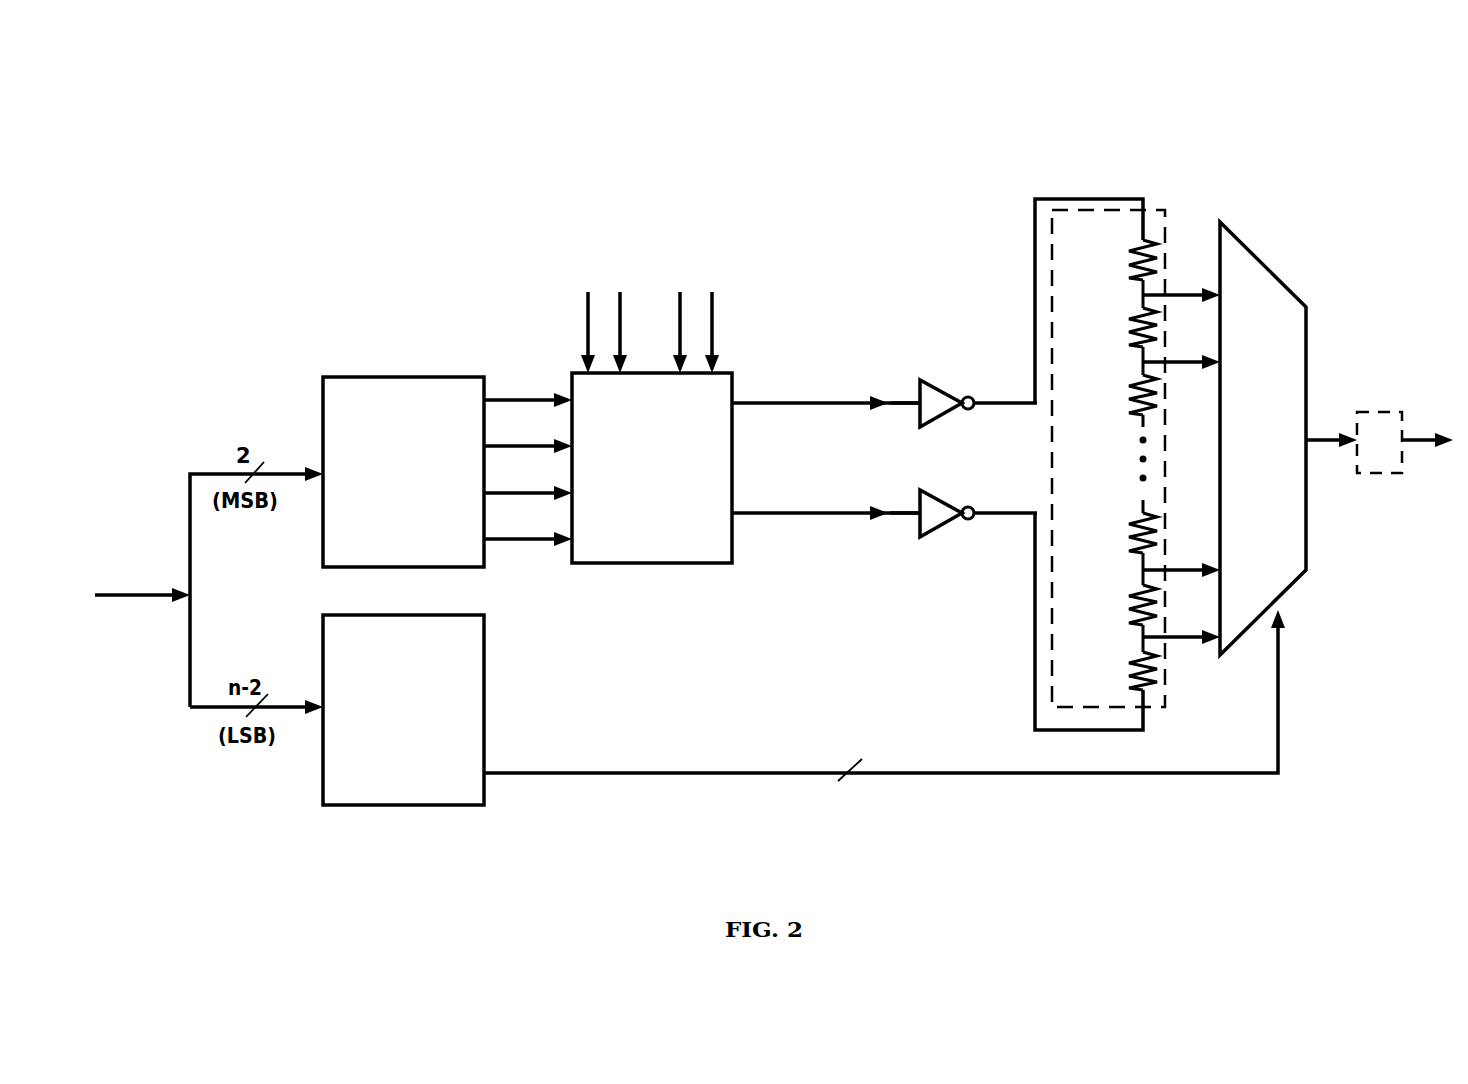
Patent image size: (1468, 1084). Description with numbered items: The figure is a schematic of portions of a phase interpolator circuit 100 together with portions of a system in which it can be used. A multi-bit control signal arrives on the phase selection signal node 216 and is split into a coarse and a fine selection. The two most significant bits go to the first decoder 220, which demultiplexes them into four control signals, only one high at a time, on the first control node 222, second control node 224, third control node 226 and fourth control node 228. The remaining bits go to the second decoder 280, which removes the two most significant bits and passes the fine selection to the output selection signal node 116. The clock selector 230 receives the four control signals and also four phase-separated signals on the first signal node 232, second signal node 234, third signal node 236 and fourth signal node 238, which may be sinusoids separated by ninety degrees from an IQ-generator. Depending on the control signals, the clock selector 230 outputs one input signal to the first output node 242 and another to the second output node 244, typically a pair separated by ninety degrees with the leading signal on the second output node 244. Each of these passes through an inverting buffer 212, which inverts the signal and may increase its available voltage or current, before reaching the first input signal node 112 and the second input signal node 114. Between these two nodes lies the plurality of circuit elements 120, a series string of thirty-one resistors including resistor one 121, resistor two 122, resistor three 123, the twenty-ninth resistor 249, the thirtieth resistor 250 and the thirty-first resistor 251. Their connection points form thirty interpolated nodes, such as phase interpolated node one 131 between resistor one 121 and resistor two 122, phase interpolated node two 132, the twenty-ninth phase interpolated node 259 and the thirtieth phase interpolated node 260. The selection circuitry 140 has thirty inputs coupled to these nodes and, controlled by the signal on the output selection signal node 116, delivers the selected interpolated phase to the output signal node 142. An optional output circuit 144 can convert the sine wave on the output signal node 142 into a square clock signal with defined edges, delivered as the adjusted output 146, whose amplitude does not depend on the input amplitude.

The phase interpolator circuit 100 is at (1236, 146).
The first input signal node 112 is at (1017, 401).
The second input signal node 114 is at (1012, 509).
The output selection signal node 116 is at (1012, 773).
The plurality of circuit elements 120 is at (1080, 206).
The resistor one 121 is at (1134, 252).
The resistor two 122 is at (1134, 320).
The resistor three 123 is at (1134, 388).
The phase interpolated node one 131 is at (1140, 292).
The phase interpolated node two 132 is at (1140, 360).
The selection circuitry 140 is at (1267, 265).
The output signal node 142 is at (1313, 439).
The output circuit 144 is at (1372, 410).
The adjusted output 146 is at (1410, 433).
The inverting buffer 212 is at (915, 386).
The phase selection signal node 216 is at (157, 602).
The first decoder 220 is at (366, 377).
The first control node 222 is at (512, 396).
The second control node 224 is at (497, 442).
The third control node 226 is at (498, 498).
The fourth control node 228 is at (517, 543).
The clock selector 230 is at (575, 373).
The first signal node 232 is at (588, 340).
The second signal node 234 is at (620, 325).
The third signal node 236 is at (680, 300).
The fourth signal node 238 is at (712, 325).
The first output node 242 is at (770, 403).
The second output node 244 is at (770, 513).
The resistor 29 249 is at (1134, 528).
The resistor 30 250 is at (1134, 597).
The resistor 31 251 is at (1134, 660).
The phase interpolated node 29 259 is at (1140, 568).
The phase interpolated node 30 260 is at (1140, 636).
The second decoder 280 is at (352, 616).